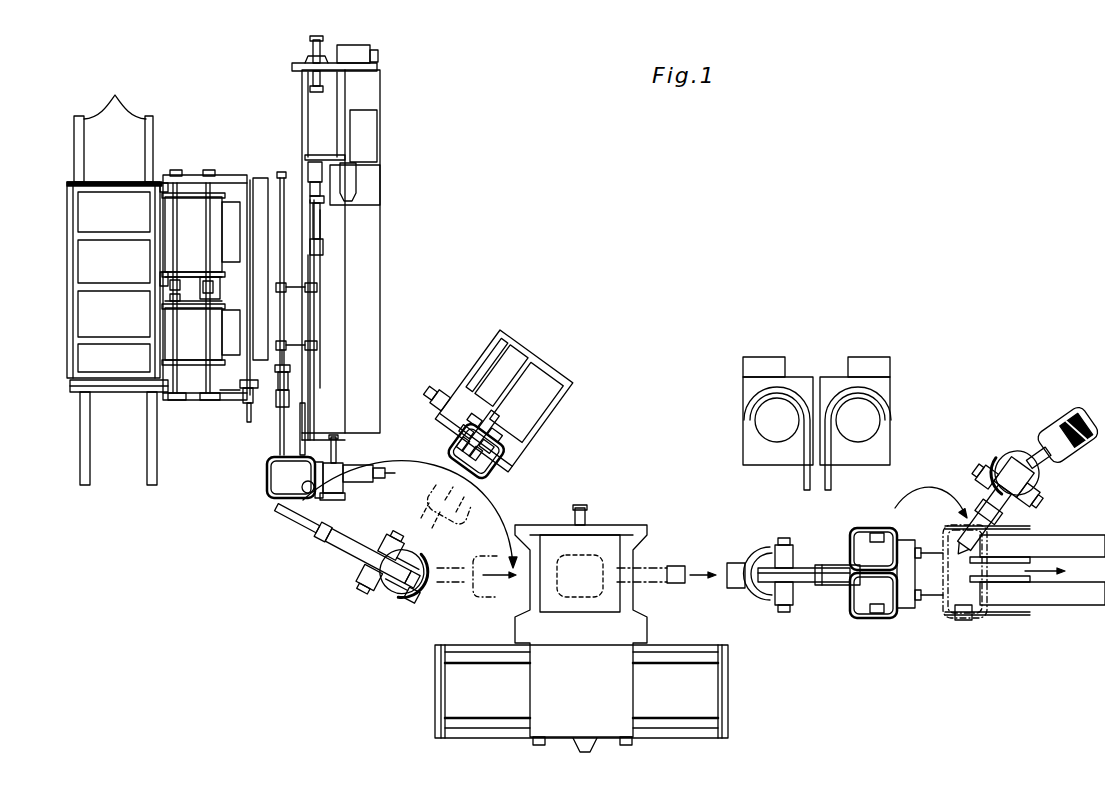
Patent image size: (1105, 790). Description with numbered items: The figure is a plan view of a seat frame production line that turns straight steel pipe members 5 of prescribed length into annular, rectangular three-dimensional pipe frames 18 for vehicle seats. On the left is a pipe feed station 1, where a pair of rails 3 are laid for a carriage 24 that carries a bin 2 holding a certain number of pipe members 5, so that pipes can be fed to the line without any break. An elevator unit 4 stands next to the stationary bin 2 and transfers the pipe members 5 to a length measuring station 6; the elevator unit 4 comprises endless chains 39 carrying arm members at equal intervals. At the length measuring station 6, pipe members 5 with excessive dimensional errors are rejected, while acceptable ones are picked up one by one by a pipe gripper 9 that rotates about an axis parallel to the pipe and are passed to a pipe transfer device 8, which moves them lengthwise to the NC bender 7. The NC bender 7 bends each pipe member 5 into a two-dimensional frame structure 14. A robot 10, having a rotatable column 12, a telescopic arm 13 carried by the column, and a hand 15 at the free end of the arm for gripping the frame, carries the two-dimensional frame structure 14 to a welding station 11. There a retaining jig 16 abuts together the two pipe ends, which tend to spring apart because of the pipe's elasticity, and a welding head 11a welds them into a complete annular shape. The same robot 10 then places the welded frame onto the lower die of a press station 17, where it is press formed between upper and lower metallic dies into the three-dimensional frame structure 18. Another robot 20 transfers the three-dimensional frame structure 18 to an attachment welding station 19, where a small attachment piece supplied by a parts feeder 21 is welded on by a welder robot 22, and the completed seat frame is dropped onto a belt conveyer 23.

The pipe feed station 1 is at (55, 172).
The bin 2 is at (124, 181).
The rails 3 is at (113, 127).
The elevator unit 4 is at (195, 230).
The pipe members 5 is at (235, 192).
The length measuring station 6 is at (241, 405).
The NC bender 7 is at (295, 451).
The pipe transfer device 8 is at (330, 257).
The pipe gripper 9 is at (293, 352).
The robot 10 is at (363, 577).
The welding station 11 is at (470, 395).
The welding head 11a is at (530, 452).
The rotatable column 12 is at (390, 602).
The telescopic arm 13 is at (355, 542).
The two-dimensional frame structure 14 is at (268, 484).
The hand 15 is at (278, 518).
The retaining jig 16 is at (477, 437).
The press station 17 is at (638, 550).
The three-dimensional frame structure 18 is at (849, 548).
The attachment welding station 19 is at (910, 532).
The robot 20 is at (754, 550).
The parts feeder 21 is at (795, 470).
The welder robot 22 is at (990, 468).
The belt conveyer 23 is at (1000, 602).
The carriage 24 is at (122, 394).
The endless chains 39 is at (192, 215).